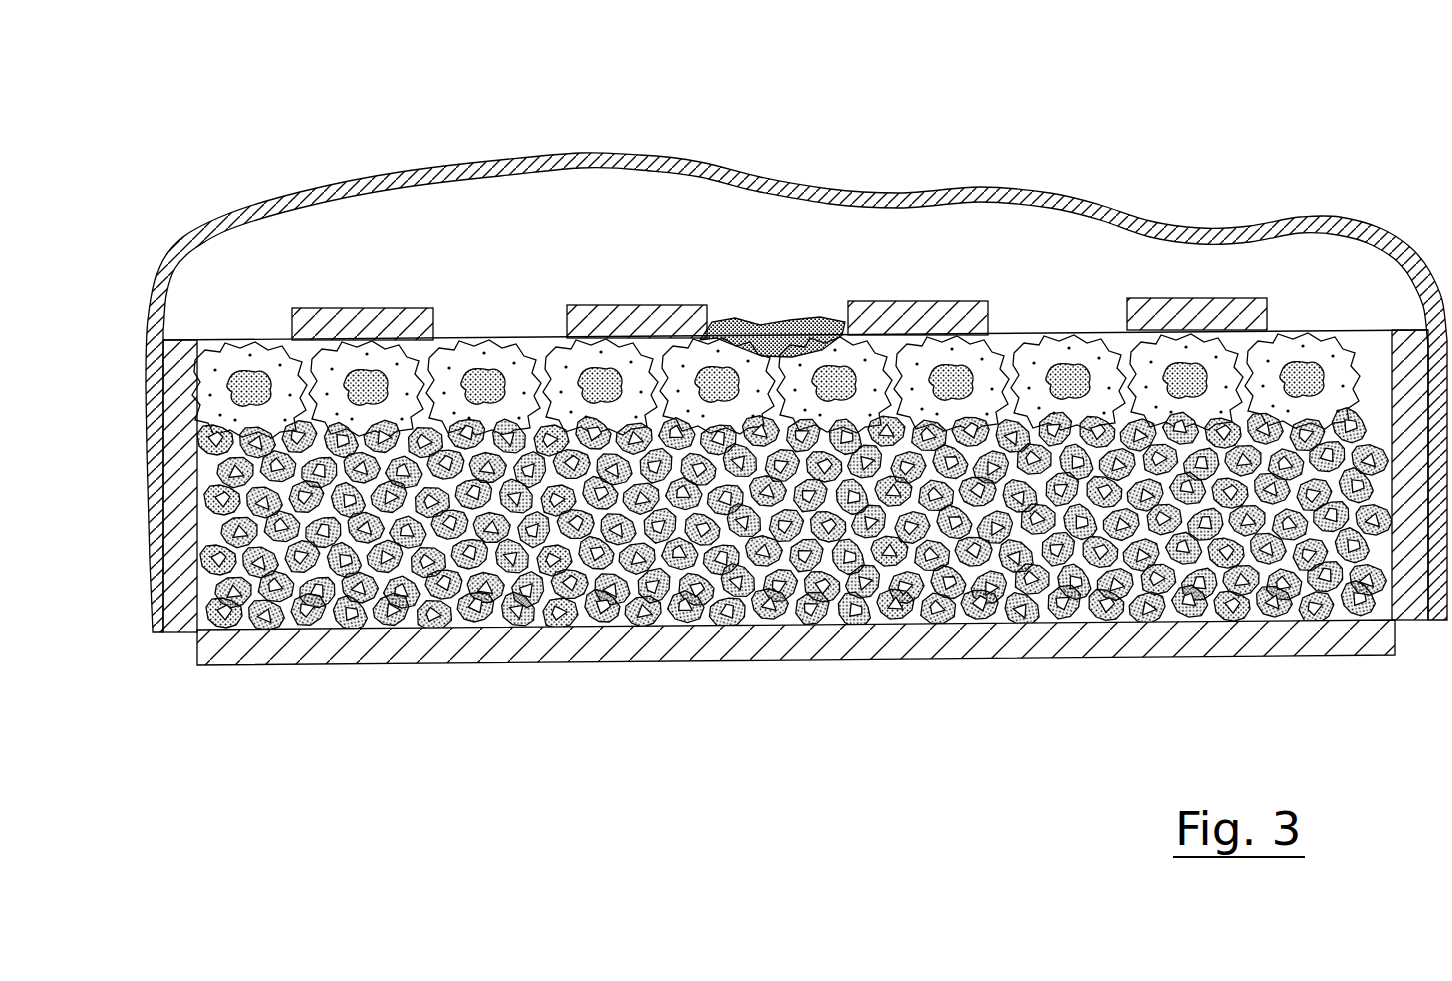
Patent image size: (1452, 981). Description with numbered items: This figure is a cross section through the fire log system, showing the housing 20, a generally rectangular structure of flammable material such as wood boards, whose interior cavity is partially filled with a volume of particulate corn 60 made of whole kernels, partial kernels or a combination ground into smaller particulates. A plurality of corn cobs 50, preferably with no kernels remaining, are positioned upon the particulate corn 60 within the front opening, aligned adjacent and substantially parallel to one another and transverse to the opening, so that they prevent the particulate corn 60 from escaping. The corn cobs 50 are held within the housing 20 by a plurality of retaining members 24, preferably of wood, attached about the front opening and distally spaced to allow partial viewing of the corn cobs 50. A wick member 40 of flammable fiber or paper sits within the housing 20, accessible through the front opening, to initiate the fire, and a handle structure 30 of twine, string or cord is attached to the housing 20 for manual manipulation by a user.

The housing 20 is at (488, 665).
The retaining members 24 is at (935, 300).
The handle structure 30 is at (1085, 200).
The wick member 40 is at (785, 330).
The corn cobs 50 is at (485, 392).
The particulate corn 60 is at (305, 415).